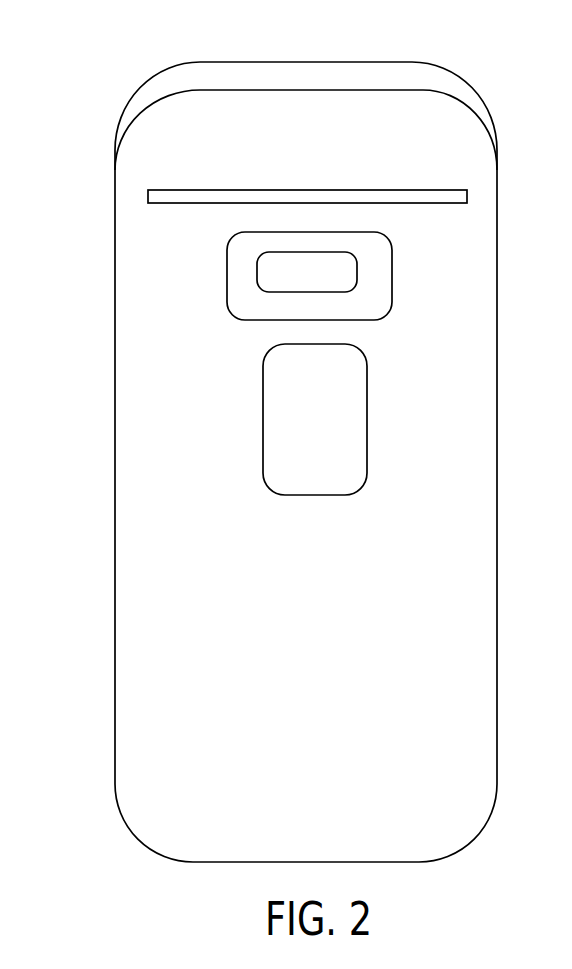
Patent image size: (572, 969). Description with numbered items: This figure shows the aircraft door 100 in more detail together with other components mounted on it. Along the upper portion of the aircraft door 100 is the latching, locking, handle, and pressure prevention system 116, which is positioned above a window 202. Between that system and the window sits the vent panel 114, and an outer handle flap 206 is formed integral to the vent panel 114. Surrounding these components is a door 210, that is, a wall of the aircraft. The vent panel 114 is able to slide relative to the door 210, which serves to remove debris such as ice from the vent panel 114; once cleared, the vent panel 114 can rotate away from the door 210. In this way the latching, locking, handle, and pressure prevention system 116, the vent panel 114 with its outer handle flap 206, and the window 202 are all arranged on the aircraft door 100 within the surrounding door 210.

The aircraft door 100 is at (98, 98).
The door 210 is at (462, 124).
The latching, locking, handle, and pressure prevention system 116 is at (208, 233).
The vent panel 114 is at (272, 307).
The outer handle flap 206 is at (297, 265).
The window 202 is at (293, 383).